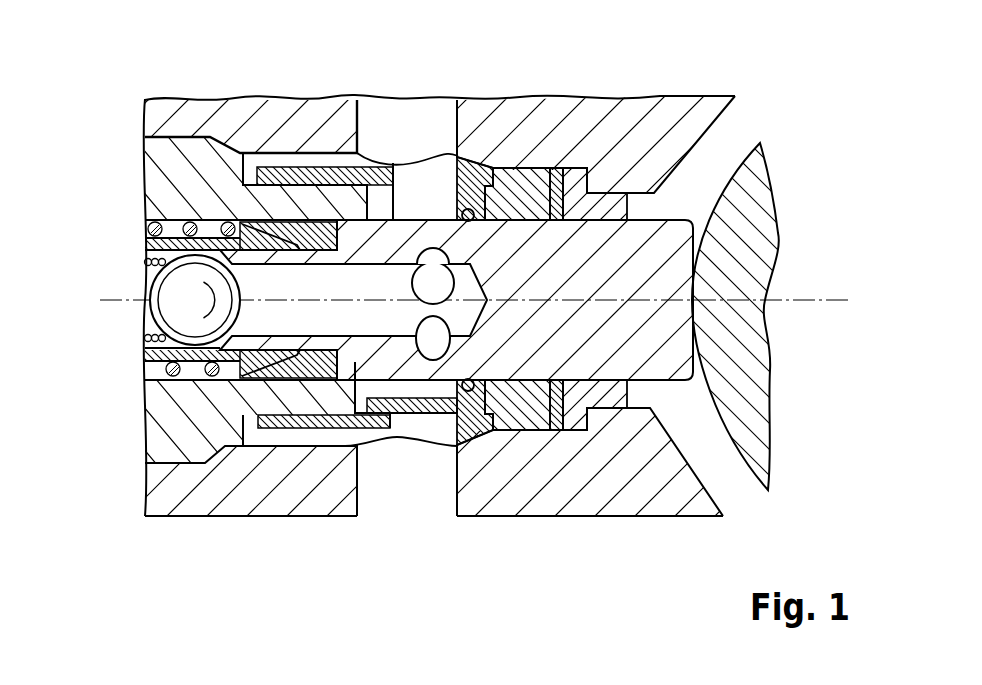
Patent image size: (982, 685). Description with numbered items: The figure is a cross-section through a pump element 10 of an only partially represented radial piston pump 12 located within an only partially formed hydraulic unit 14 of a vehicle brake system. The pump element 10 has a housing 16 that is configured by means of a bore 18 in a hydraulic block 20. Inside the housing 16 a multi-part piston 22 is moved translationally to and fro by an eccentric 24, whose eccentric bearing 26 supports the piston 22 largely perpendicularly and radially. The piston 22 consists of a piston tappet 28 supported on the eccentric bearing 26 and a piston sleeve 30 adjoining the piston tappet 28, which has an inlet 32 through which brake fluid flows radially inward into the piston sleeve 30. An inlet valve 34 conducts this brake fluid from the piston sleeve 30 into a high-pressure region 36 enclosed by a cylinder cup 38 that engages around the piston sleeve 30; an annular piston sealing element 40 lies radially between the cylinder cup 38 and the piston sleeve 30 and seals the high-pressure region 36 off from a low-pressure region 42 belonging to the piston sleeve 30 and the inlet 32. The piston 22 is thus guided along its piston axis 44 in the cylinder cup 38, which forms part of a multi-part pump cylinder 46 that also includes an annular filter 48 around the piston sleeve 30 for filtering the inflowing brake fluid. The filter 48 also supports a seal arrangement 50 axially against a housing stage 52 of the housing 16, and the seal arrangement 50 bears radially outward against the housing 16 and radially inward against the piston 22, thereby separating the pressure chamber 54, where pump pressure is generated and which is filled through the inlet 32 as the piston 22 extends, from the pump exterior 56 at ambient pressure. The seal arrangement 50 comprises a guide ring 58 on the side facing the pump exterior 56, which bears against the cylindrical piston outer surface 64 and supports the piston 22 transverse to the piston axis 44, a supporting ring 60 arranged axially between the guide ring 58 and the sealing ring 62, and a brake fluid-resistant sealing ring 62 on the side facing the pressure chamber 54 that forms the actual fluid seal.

The pump element 10 is at (128, 151).
The radial piston pump 12 is at (689, 59).
The hydraulic unit 14 is at (307, 82).
The housing 16 is at (700, 500).
The bore 18 is at (127, 238).
The hydraulic block 20 is at (186, 120).
The piston 22 is at (491, 332).
The eccentric 24 is at (798, 162).
The eccentric bearing 26 is at (752, 222).
The piston tappet 28 is at (543, 370).
The piston sleeve 30 is at (345, 382).
The inlet 32 is at (389, 494).
The inlet valve 34 is at (162, 312).
The high-pressure region 36 is at (146, 371).
The cylinder cup 38 is at (269, 392).
The piston sealing element 40 is at (306, 416).
The low-pressure region 42 is at (434, 348).
The piston axis 44 is at (815, 303).
The pump cylinder 46 is at (216, 413).
The filter 48 is at (459, 173).
The seal arrangement 50 is at (567, 420).
The housing stage 52 is at (593, 178).
The pressure chamber 54 is at (462, 212).
The pump exterior 56 is at (656, 205).
The guide ring 58 is at (557, 176).
The supporting ring 60 is at (515, 178).
The sealing ring 62 is at (477, 162).
The piston outer surface 64 is at (665, 392).